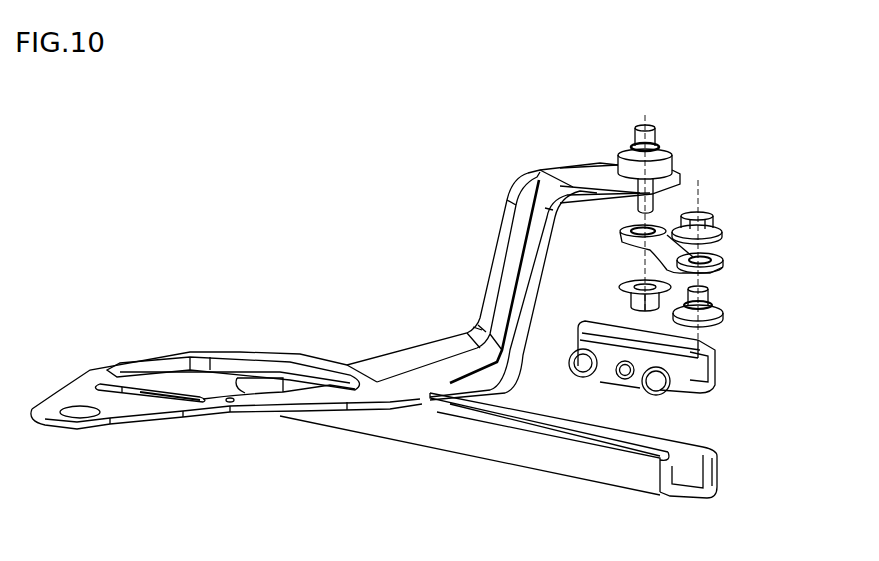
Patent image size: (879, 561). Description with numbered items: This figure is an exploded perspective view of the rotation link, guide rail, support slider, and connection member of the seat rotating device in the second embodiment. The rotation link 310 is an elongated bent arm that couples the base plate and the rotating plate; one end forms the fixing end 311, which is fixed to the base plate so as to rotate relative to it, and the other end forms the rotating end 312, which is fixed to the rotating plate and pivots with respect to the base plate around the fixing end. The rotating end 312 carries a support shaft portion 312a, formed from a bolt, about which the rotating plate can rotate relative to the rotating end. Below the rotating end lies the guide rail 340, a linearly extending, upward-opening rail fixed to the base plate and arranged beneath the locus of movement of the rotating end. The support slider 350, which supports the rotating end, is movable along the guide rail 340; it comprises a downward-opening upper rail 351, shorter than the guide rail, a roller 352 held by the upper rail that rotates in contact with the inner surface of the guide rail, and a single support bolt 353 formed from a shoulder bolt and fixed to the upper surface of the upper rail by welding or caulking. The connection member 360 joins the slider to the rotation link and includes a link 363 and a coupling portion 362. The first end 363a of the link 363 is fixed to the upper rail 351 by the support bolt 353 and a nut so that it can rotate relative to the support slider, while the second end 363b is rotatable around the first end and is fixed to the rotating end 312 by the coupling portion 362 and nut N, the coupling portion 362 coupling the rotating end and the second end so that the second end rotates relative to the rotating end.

The rotation link 310 is at (332, 366).
The fixing end 311 is at (72, 402).
The rotating end 312 is at (636, 178).
The support shaft portion 312a is at (634, 137).
The guide rail 340 is at (602, 470).
The support slider 350 is at (780, 302).
The upper rail 351 is at (722, 362).
The roller 352 is at (704, 386).
The support bolt 353 is at (722, 315).
The connection member 360 is at (795, 82).
The coupling portion 362 is at (667, 228).
The link 363 is at (820, 115).
The first end 363a is at (720, 257).
The second end 363b is at (706, 213).
The nut N is at (620, 300).